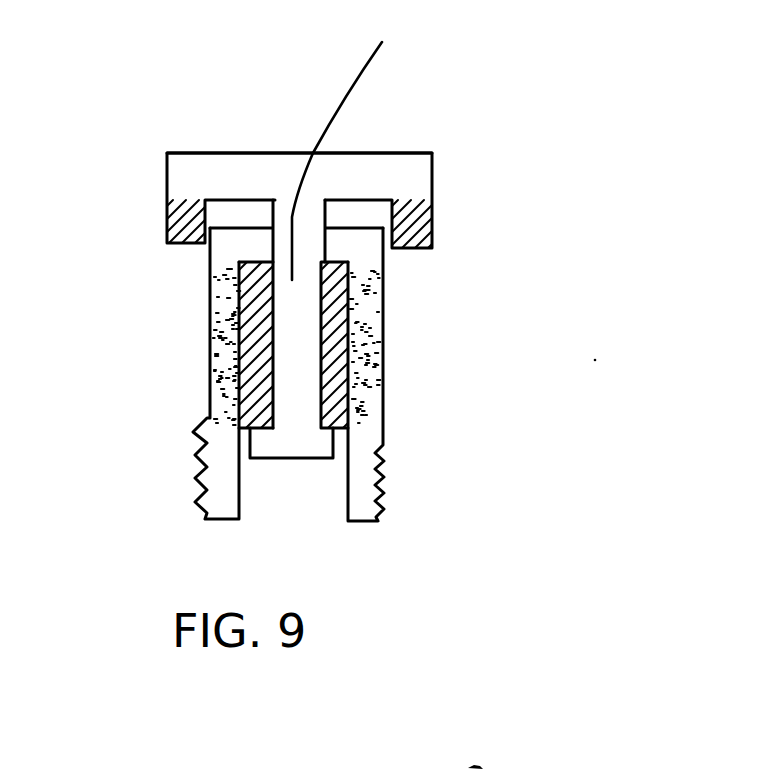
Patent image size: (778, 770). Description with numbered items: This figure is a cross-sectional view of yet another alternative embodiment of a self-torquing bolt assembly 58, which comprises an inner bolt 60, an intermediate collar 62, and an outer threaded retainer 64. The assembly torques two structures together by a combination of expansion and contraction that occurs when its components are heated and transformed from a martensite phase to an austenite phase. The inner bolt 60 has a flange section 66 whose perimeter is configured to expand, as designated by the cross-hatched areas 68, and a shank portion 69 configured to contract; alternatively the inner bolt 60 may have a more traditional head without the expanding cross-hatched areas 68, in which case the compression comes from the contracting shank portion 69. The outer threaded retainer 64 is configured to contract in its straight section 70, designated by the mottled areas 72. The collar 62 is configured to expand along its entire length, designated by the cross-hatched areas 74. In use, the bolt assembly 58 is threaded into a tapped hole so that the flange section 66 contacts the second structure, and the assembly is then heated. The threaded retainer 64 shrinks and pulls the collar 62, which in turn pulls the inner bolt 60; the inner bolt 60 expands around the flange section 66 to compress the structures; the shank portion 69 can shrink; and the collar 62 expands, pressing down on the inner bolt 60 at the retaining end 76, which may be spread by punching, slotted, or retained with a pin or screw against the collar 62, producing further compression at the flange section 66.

The self-torquing bolt assembly 58 is at (437, 90).
The inner bolt 60 is at (289, 141).
The intermediate collar 62 is at (263, 251).
The outer threaded retainer 64 is at (398, 353).
The flange section 66 is at (167, 217).
The cross-hatched areas 68 is at (413, 212).
The shank portion 69 is at (361, 140).
The straight section 70 is at (215, 360).
The mottled areas 72 is at (363, 383).
The cross-hatched areas 74 is at (333, 310).
The retaining end 76 is at (285, 450).